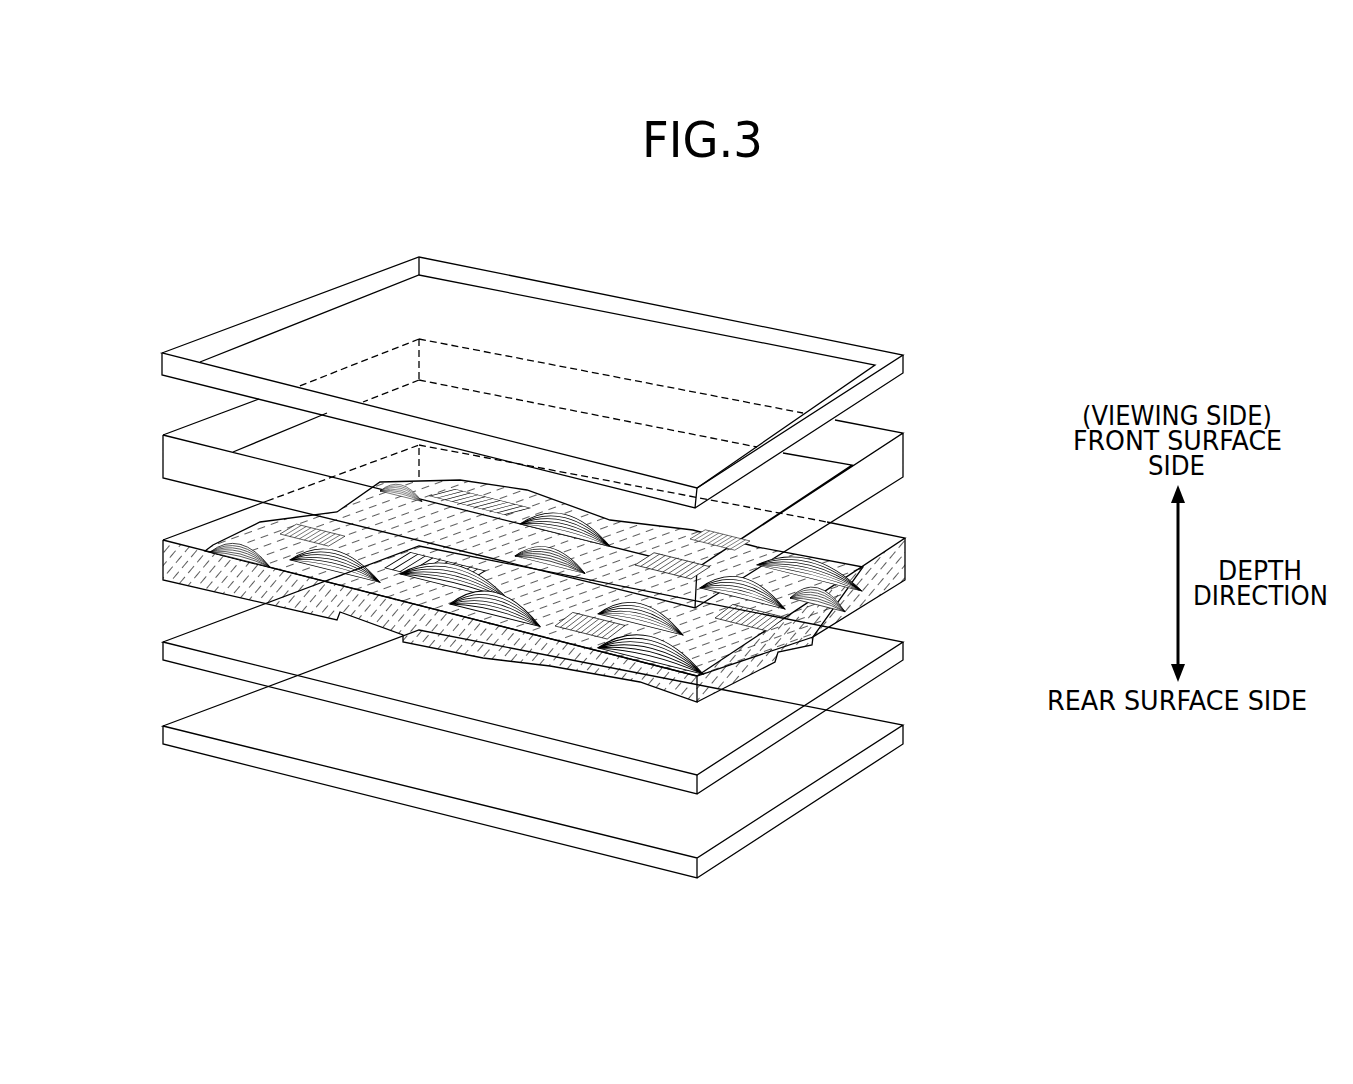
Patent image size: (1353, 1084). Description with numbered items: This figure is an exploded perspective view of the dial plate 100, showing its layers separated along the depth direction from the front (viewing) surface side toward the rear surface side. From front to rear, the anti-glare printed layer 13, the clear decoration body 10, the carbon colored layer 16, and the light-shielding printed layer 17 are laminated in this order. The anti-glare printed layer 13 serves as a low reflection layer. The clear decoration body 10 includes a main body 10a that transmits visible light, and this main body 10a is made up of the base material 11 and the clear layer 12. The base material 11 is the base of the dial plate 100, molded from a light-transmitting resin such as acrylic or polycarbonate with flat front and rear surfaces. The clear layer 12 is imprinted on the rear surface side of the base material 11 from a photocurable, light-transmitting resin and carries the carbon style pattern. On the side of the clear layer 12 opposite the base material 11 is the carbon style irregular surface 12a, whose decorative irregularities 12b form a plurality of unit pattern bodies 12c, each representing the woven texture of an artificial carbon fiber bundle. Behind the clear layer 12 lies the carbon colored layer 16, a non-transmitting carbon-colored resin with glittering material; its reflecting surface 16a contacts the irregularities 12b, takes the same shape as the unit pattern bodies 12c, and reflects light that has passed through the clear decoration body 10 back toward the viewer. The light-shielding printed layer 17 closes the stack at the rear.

The dial plate 100 is at (700, 258).
The anti-glare (AG) printed layer 13 is at (912, 363).
The base material 11 is at (912, 453).
The clear decoration body 10 is at (980, 410).
The main body 10a is at (539, 550).
The clear layer 12 is at (539, 573).
The carbon style irregular surface 12a is at (868, 603).
The irregularities 12b is at (469, 578).
The unit pattern bodies 12c is at (262, 527).
The carbon colored layer 16 is at (583, 670).
The reflecting surface 16a is at (840, 650).
The light-shielding printed layer 17 is at (915, 732).